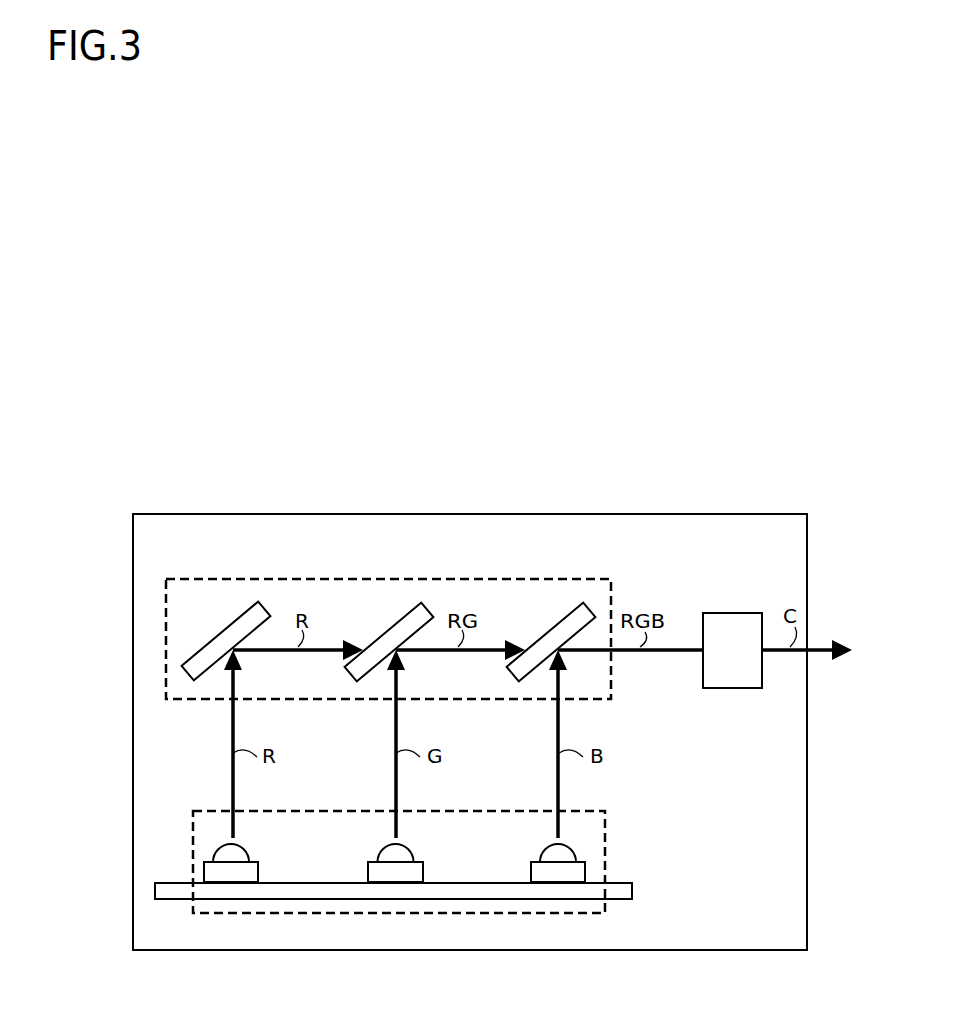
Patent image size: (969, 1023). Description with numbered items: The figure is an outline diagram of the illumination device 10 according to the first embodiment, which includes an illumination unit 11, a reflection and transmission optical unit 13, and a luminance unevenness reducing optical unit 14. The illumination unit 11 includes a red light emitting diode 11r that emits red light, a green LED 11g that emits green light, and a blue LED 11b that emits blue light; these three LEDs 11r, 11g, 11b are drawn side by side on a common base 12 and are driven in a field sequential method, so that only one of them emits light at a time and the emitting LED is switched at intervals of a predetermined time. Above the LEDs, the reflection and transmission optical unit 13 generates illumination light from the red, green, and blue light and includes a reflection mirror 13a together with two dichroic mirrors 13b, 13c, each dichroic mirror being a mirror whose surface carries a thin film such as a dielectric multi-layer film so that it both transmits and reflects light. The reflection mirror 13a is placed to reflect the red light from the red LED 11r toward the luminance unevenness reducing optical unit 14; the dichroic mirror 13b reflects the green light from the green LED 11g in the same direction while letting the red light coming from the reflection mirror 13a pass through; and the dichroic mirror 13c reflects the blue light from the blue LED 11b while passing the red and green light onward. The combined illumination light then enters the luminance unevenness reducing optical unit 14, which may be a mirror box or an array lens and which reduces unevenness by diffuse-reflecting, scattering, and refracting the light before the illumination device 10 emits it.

The illumination device 10 is at (302, 443).
The illumination unit 11 is at (193, 841).
The red light emitting diode 11r is at (237, 875).
The green LED 11g is at (401, 875).
The blue LED 11b is at (558, 875).
The substrate 12 is at (633, 890).
The reflection and transmission optical unit 13 is at (166, 626).
The reflection mirror 13a is at (238, 619).
The dichroic mirror 13b is at (392, 620).
The dichroic mirror 13c is at (553, 615).
The luminance unevenness reducing optical unit 14 is at (735, 688).